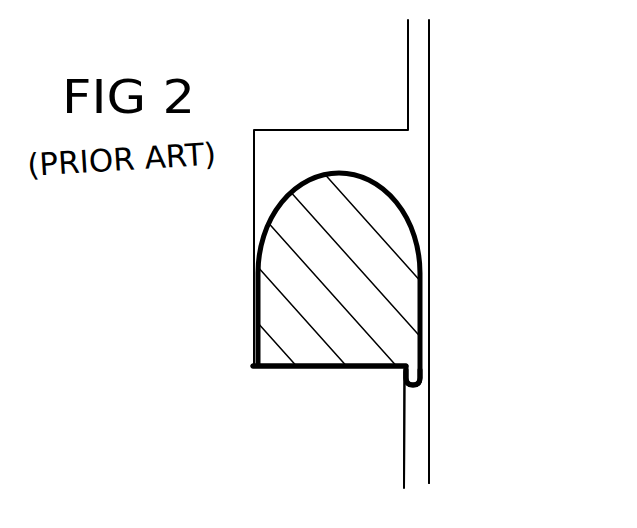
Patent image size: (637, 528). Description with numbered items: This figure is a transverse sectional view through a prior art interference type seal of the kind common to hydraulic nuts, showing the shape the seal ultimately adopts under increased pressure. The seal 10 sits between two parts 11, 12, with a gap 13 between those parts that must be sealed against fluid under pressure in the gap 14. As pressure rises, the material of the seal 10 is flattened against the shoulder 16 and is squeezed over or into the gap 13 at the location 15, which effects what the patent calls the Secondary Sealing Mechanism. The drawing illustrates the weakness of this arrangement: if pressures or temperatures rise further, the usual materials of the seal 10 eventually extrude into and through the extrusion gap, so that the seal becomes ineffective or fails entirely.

The seal 10 is at (281, 264).
The part 11 is at (529, 242).
The part 12 is at (335, 495).
The gap 13 is at (420, 453).
The gap 14 is at (423, 72).
The Secondary Sealing Mechanism location 15 is at (440, 376).
The shoulder 16 is at (293, 380).